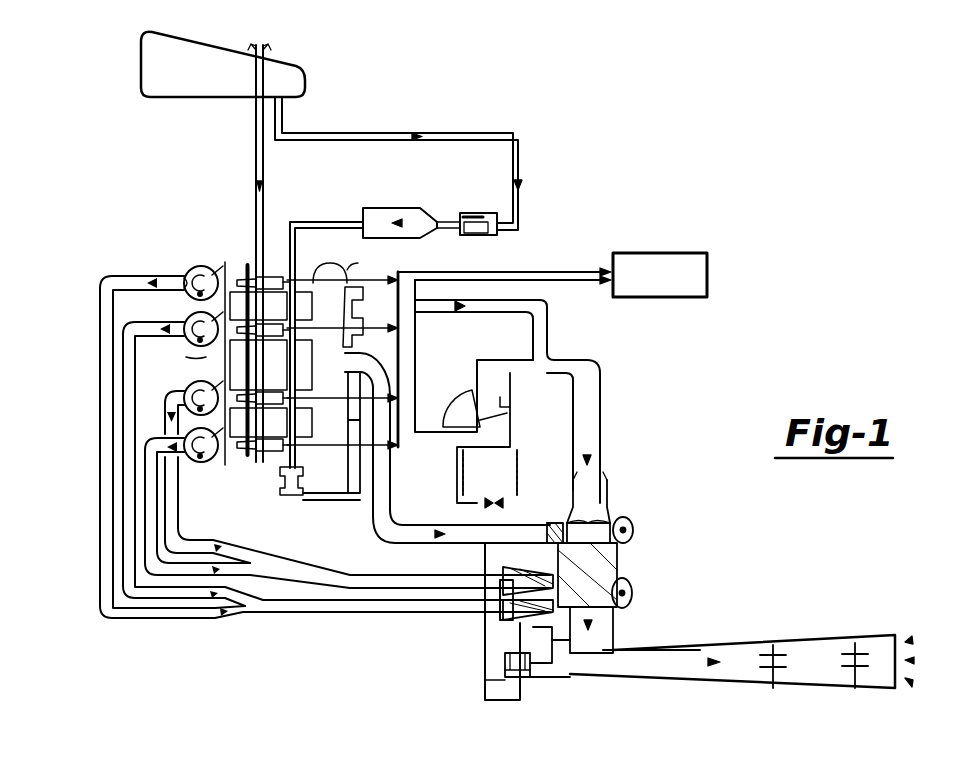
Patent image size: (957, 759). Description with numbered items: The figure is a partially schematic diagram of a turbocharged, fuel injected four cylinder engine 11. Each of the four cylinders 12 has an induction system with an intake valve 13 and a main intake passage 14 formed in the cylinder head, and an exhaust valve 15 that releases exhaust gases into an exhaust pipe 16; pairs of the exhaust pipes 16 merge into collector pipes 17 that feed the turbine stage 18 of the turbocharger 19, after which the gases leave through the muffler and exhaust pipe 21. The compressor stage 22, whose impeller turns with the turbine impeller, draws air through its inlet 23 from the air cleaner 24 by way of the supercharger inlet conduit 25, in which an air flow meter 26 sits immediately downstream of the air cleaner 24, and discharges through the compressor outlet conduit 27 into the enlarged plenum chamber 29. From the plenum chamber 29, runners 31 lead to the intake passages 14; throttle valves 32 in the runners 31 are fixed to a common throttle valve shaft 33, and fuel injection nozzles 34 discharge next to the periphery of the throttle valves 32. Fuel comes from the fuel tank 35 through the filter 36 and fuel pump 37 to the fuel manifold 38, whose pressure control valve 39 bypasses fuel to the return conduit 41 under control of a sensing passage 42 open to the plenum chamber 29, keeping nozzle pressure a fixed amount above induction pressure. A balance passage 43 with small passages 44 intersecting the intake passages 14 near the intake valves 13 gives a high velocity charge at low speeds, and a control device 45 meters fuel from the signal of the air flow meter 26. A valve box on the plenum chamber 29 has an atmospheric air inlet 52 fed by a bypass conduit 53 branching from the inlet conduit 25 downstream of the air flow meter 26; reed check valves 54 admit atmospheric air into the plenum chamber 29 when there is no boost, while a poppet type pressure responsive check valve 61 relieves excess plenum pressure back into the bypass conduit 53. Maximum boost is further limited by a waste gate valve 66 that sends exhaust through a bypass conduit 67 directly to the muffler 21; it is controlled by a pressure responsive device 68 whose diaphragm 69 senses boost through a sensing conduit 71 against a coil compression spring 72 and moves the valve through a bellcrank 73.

The engine 11 is at (115, 265).
The cylinders 12 is at (198, 268).
The intake valve 13 is at (217, 265).
The main intake passage 14 is at (222, 266).
The exhaust valve 15 is at (178, 270).
The exhaust pipe 16 is at (100, 330).
The collector pipes 17 is at (370, 590).
The turbine stage 18 is at (617, 620).
The turbocharger 19 is at (637, 555).
The muffler and exhaust pipe 21 is at (812, 634).
The compressor stage 22 is at (612, 508).
The inlet 23 is at (602, 487).
The air cleaner 24 is at (458, 485).
The supercharger inlet conduit 25 is at (600, 418).
The air flow meter 26 is at (457, 403).
The compressor outlet conduit 27 is at (383, 543).
The plenum chamber 29 is at (347, 268).
The runners 31 is at (305, 268).
The throttle valves 32 is at (247, 268).
The throttle valve shaft 33 is at (262, 460).
The fuel injection nozzles 34 is at (270, 255).
The fuel tank 35 is at (183, 98).
The filter 36 is at (472, 213).
The fuel pump 37 is at (410, 208).
The fuel manifold 38 is at (352, 307).
The pressure control valve 39 is at (290, 495).
The return conduit 41 is at (255, 149).
The sensing passage 42 is at (350, 500).
The balance passage 43 is at (190, 358).
The small passages 44 is at (170, 368).
The control device 45 is at (700, 253).
The atmospheric air inlet 52 is at (393, 318).
The atmospheric air bypass conduit 53 is at (535, 306).
The check valves 54 is at (387, 303).
The pressure responsive check valve 61 is at (383, 365).
The waste gate valve 66 is at (500, 615).
The bypass conduit 67 is at (640, 637).
The pressure responsive device 68 is at (530, 680).
The diaphragm 69 is at (525, 678).
The sensing conduit 71 is at (497, 705).
The coil compression spring 72 is at (545, 674).
The bellcrank 73 is at (505, 660).